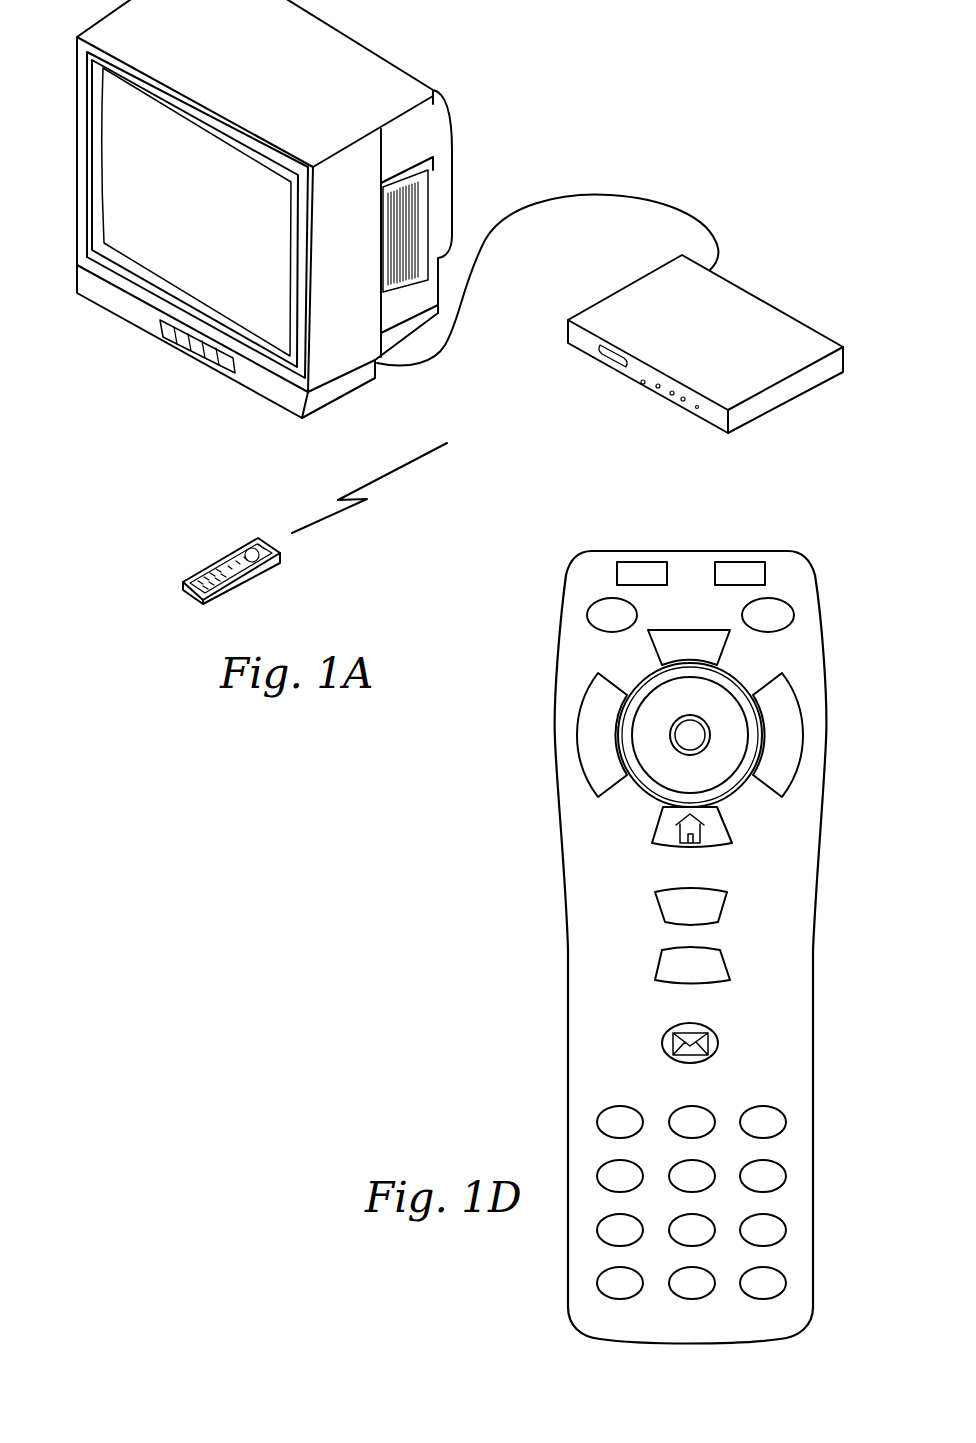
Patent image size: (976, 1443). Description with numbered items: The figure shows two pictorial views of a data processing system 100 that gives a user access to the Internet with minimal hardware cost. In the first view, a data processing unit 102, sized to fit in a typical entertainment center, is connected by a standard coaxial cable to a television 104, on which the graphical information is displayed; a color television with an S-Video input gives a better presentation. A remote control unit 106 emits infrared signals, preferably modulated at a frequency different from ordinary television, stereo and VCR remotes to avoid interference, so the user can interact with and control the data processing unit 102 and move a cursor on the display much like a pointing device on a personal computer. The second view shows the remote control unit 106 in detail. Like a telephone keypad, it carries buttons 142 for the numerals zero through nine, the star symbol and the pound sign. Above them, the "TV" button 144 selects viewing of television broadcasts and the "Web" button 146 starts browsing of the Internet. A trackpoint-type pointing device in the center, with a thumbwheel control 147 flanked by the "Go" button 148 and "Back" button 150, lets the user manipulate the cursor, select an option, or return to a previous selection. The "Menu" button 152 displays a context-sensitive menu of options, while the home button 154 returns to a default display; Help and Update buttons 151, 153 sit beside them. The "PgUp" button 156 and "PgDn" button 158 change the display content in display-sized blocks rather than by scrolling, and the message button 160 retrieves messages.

In FIG. 1A, the data processing system 100 is at (570, 460).
In FIG. 1A, the data processing unit 102 is at (782, 302).
In FIG. 1A, the television 104 is at (413, 72).
In FIG. 1A, the remote control unit 106 is at (202, 565).
In FIG. 1D, the remote control unit 106 is at (815, 1072).
In FIG. 1D, the buttons 142 is at (824, 1097).
In FIG. 1D, the "TV" button 144 is at (637, 562).
In FIG. 1D, the "Web" button 146 is at (740, 562).
In FIG. 1D, the thumbwheel / cursor control 147 is at (700, 738).
In FIG. 1D, the "Go" button 148 is at (776, 797).
In FIG. 1D, the "Back" button 150 is at (612, 797).
In FIG. 1D, the Help button 151 is at (586, 613).
In FIG. 1D, the "Menu" button 152 is at (698, 628).
In FIG. 1D, the Update button 153 is at (795, 620).
In FIG. 1D, the home button 154 is at (718, 847).
In FIG. 1D, the "PgUp" button 156 is at (725, 900).
In FIG. 1D, the "PgDn" button 158 is at (712, 983).
In FIG. 1D, the message button 160 is at (720, 1043).